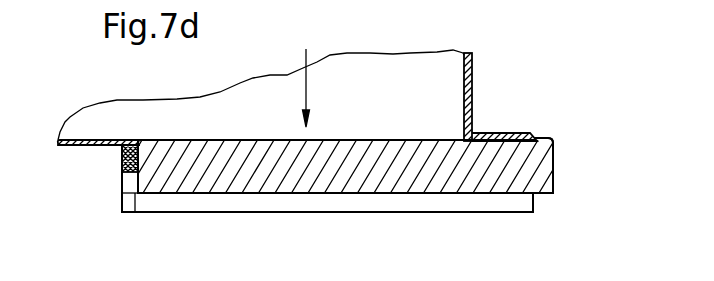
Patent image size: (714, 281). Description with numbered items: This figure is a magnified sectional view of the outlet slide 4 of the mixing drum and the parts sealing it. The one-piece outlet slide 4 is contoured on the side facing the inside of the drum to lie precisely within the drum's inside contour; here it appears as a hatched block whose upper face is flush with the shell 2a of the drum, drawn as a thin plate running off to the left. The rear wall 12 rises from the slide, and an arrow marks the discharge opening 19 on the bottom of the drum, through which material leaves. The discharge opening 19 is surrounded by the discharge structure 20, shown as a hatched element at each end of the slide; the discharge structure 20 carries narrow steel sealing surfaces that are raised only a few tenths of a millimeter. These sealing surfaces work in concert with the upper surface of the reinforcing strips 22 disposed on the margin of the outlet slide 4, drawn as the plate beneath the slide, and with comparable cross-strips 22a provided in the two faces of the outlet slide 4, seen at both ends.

The shell 2a is at (73, 140).
The outlet slide 4 is at (353, 173).
The rear wall 12 is at (473, 68).
The discharge opening 19 is at (302, 73).
The discharge structure 20 is at (121, 158).
The reinforcing strips 22 is at (452, 202).
The cross-strips 22a is at (135, 212).